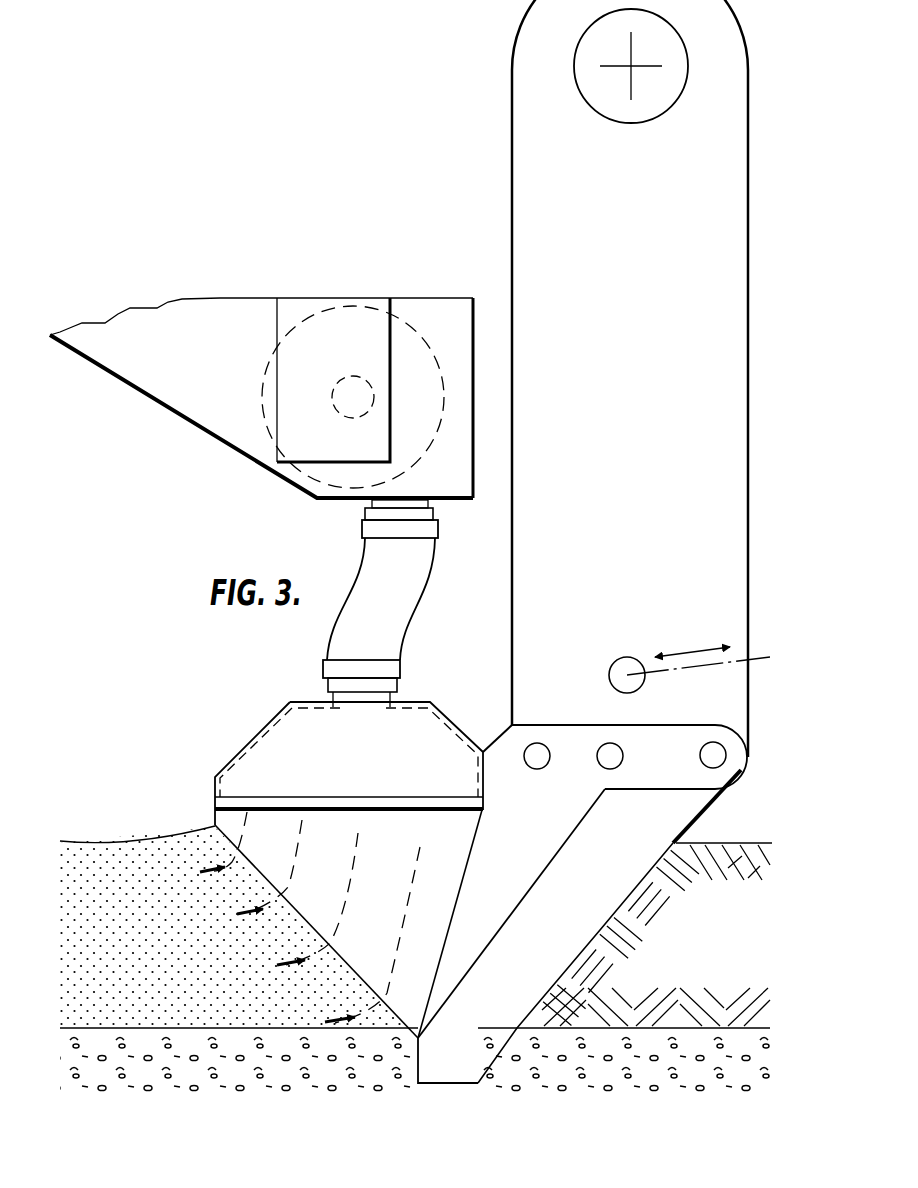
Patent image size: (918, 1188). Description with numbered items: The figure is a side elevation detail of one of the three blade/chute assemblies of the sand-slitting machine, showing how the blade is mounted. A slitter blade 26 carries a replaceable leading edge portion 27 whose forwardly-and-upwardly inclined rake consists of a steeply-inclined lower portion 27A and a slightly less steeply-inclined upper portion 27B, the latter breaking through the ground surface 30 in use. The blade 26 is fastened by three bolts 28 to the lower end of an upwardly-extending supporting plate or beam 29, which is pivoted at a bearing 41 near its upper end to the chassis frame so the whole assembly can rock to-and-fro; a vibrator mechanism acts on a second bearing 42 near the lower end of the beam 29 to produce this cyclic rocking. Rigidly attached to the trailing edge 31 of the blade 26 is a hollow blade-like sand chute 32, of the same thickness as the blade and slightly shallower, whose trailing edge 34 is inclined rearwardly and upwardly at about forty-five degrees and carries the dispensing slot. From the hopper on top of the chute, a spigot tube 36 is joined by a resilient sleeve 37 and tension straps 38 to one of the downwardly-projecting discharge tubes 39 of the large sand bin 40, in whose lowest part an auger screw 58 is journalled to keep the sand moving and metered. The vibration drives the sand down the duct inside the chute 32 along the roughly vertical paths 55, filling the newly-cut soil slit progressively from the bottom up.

The slitter blade 26 is at (505, 887).
The replaceable leading edge portion 27 is at (555, 947).
The steeply-inclined lower portion 27A is at (510, 1047).
The less steeply-inclined upper portion 27B is at (693, 822).
The bolts 28 is at (538, 743).
The supporting plate or beam 29 is at (520, 248).
The ground surface 30 is at (745, 843).
The trailing edge 31 is at (474, 846).
The sand chute 32 is at (252, 748).
The trailing edge of the chute 34 is at (316, 931).
The spigot tube 36 is at (393, 700).
The resilient sleeve 37 is at (410, 581).
The tension straps 38 is at (437, 530).
The discharge tube 39 is at (428, 504).
The sand bin 40 is at (153, 373).
The bearing 41 is at (680, 47).
The second bearing 42 is at (609, 670).
The sand flow paths 55 is at (408, 900).
The auger screw 58 is at (334, 323).